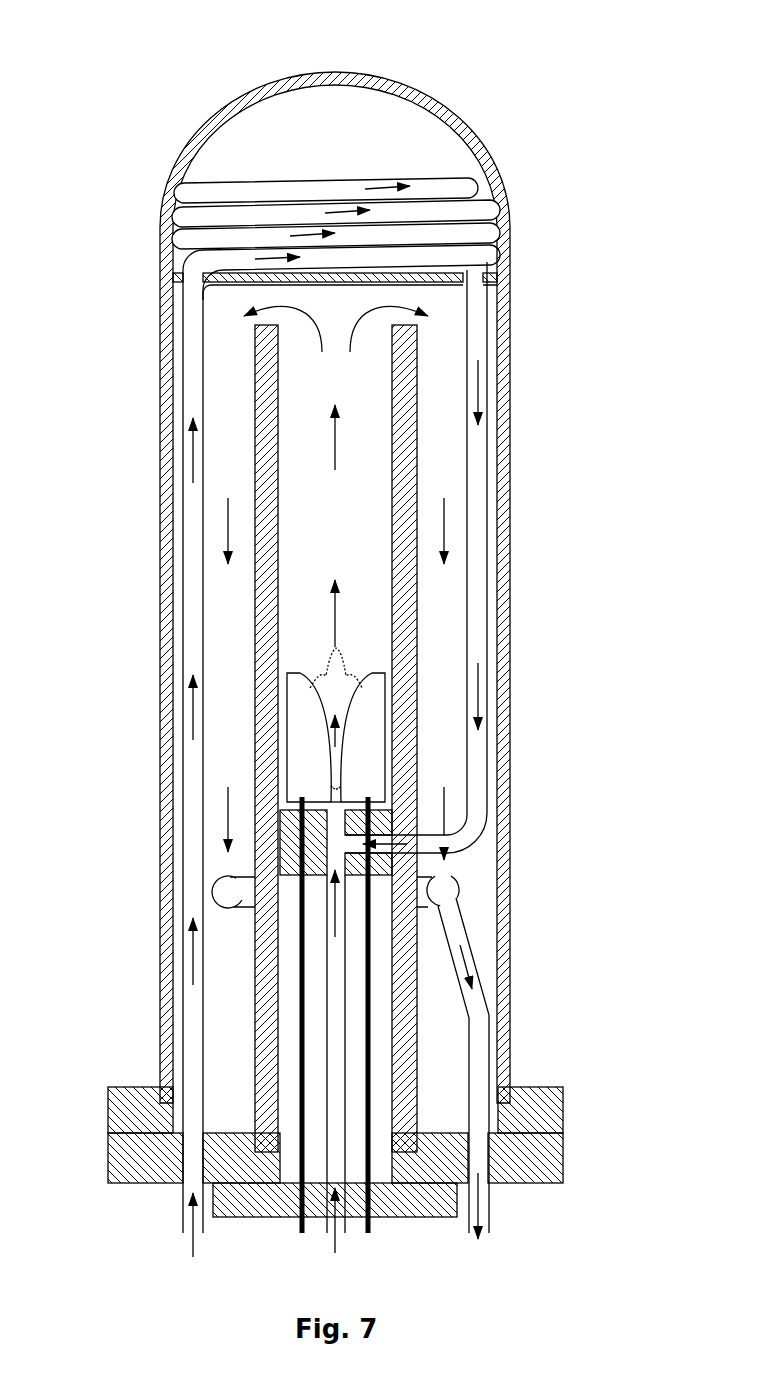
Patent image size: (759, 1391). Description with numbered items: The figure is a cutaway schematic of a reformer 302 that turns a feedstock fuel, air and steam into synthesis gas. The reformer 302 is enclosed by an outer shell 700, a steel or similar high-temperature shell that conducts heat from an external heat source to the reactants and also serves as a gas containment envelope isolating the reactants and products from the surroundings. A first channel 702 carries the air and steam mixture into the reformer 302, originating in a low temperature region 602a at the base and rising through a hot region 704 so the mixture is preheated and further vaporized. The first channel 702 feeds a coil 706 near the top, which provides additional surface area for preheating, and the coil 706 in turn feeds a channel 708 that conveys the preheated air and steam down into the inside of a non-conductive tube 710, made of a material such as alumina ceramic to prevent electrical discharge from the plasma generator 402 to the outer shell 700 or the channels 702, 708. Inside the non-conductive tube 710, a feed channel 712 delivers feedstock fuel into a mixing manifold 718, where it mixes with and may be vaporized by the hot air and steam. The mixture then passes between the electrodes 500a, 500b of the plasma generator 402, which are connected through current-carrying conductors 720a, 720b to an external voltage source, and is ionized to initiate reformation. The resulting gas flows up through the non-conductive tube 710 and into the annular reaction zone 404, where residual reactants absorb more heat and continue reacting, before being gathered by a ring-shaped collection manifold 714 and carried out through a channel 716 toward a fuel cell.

The reformer 302 is at (152, 66).
The outer shell 700 is at (163, 313).
The hot region 704 is at (134, 603).
The coil 706 is at (522, 180).
The first channel 702 is at (195, 855).
The channel 708 is at (478, 550).
The non-conductive tube 710 is at (457, 648).
The annular reaction zone 404 is at (443, 472).
The feed channel 712 is at (333, 1012).
The electrode 500a is at (302, 778).
The electrode 500b is at (368, 775).
The plasma generator 402 is at (376, 638).
The mixing manifold 718 is at (290, 868).
The collection manifold 714 is at (448, 893).
The current-carrying conductor 720a is at (302, 1050).
The current-carrying conductor 720b is at (372, 1032).
The channel 716 is at (490, 1068).
The low temperature region 602a is at (237, 1285).